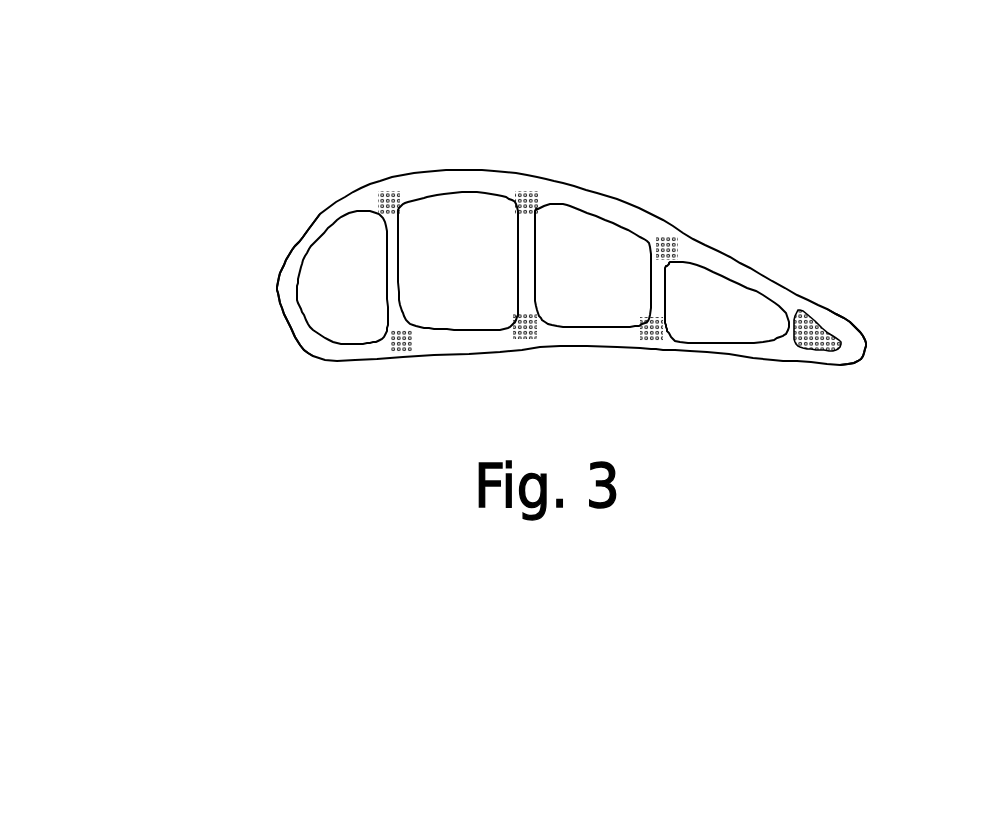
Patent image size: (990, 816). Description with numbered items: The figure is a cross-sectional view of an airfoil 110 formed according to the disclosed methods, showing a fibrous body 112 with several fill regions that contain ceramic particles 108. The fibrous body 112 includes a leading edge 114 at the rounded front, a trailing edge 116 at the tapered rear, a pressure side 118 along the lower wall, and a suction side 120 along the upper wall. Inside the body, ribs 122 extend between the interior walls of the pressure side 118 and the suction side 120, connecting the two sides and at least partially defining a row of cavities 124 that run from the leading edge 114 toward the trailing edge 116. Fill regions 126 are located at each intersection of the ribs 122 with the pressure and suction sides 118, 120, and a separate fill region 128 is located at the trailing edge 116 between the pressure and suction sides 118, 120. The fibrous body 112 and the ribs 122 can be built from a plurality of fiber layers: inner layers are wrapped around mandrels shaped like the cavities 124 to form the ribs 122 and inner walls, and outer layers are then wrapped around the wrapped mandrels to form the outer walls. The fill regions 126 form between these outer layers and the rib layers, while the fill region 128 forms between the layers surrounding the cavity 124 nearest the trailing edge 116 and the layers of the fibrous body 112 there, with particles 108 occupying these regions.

The particles 108 is at (666, 250).
The airfoil 110 is at (569, 226).
The fibrous body 112 is at (553, 197).
The leading edge 114 is at (277, 288).
The trailing edge 116 is at (868, 344).
The pressure side 118 is at (472, 352).
The suction side 120 is at (410, 173).
The ribs 122 is at (393, 261).
The cavities 124 is at (723, 312).
The fill regions 126 is at (400, 357).
The fill region 128 is at (818, 323).